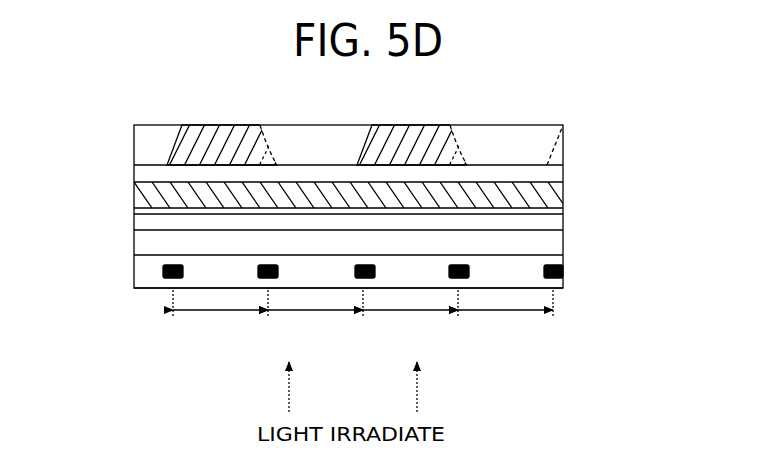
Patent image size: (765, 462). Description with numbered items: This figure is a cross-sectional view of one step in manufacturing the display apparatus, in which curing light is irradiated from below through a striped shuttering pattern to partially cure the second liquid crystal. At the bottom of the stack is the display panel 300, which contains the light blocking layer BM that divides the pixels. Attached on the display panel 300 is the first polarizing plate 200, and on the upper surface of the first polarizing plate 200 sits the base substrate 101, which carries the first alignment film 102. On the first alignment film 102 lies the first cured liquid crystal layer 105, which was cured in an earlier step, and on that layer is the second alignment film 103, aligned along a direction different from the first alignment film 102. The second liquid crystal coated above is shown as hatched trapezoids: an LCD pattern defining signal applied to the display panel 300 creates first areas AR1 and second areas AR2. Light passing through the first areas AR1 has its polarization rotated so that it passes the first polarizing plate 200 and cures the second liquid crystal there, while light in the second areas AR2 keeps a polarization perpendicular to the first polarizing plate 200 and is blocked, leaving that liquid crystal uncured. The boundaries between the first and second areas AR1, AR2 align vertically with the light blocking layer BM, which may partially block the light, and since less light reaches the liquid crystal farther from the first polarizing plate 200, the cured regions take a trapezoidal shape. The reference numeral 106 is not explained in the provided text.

The color filter pattern 106 is at (563, 150).
The second alignment film 103 is at (563, 168).
The first cured liquid crystal layer 105 is at (563, 193).
The first alignment film 102 is at (563, 210).
The base substrate 101 is at (563, 228).
The first polarizing plate 200 is at (134, 239).
The light blocking layer BM is at (163, 271).
The display panel 300 is at (134, 281).
The first area AR1 is at (315, 314).
The second area AR2 is at (410, 314).